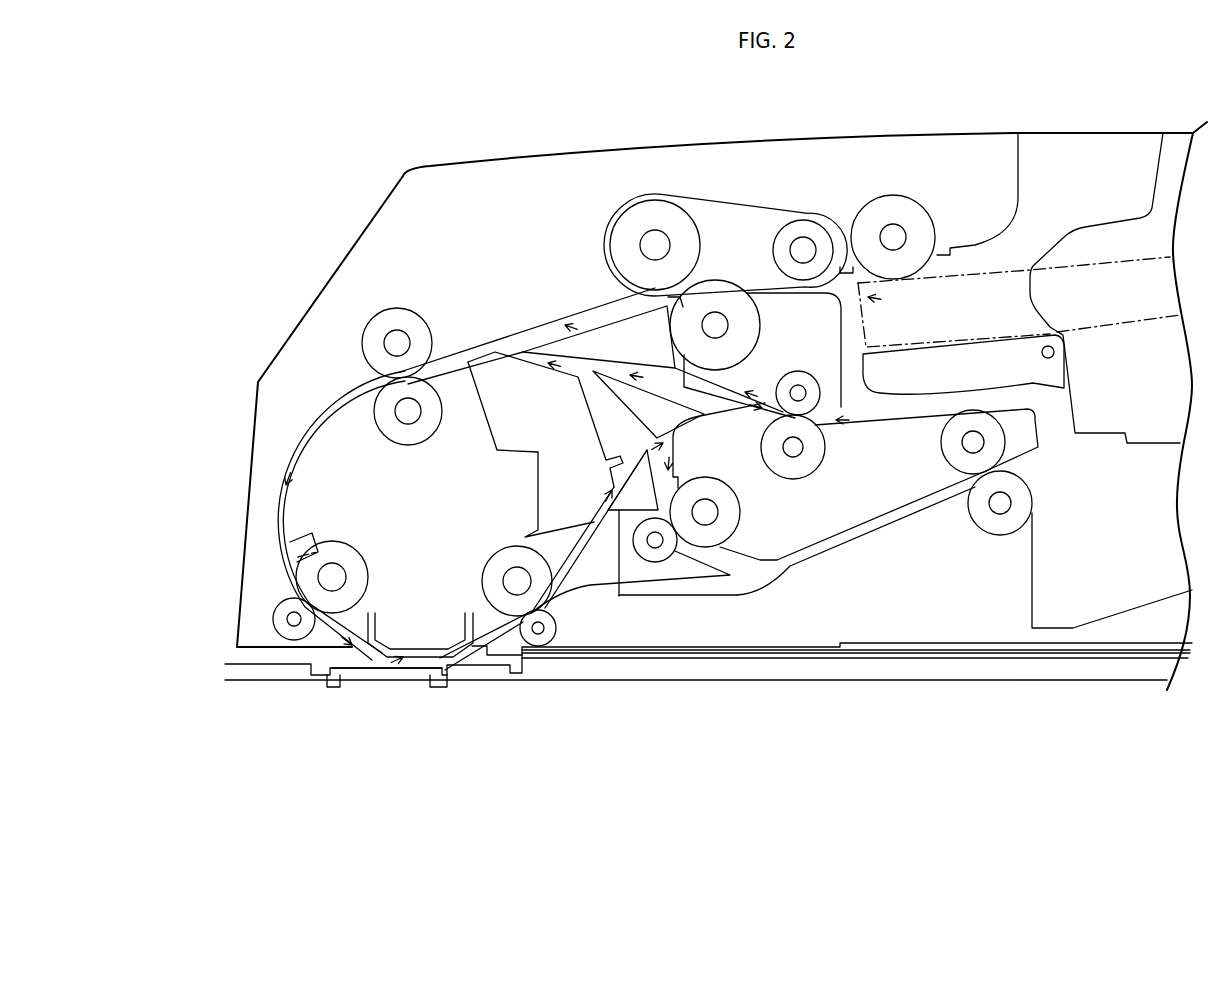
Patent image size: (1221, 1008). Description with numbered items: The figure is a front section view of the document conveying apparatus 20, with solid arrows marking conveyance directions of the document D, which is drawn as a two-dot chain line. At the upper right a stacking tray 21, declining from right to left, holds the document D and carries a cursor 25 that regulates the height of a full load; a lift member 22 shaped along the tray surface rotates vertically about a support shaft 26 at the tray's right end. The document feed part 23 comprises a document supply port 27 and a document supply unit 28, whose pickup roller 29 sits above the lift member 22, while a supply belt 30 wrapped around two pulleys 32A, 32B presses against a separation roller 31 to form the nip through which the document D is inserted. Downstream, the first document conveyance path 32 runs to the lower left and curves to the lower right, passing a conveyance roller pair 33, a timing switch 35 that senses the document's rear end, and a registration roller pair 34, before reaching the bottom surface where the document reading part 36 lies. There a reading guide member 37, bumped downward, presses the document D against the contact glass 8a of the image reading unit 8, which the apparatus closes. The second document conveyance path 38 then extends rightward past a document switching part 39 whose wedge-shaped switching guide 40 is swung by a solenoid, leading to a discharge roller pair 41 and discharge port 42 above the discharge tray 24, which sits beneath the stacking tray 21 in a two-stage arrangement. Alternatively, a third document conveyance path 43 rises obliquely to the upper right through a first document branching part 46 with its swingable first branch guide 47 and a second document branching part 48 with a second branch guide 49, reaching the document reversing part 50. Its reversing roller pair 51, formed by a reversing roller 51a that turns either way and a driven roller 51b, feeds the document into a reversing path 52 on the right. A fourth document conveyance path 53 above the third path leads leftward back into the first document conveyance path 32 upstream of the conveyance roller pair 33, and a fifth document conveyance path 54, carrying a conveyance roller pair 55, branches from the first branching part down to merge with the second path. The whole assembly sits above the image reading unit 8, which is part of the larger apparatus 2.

The image forming apparatus 2 is at (222, 655).
The image reading unit 8 is at (305, 690).
The contact glass 8a is at (358, 688).
The document conveying apparatus 20 is at (1080, 124).
The stacking tray 21 is at (1120, 336).
The lift member 22 is at (934, 342).
The document feed part 23 is at (335, 250).
The discharge tray 24 is at (1082, 624).
The cursor 25 is at (1112, 218).
The support shaft 26 is at (1044, 350).
The document supply port 27 is at (880, 300).
The document supply unit 28 is at (690, 189).
The pickup roller 29 is at (925, 200).
The supply belt 30 is at (606, 230).
The separation roller 31 is at (669, 325).
The first document conveyance path 32 is at (318, 412).
The pulley 32A is at (637, 222).
The pulley 32B is at (800, 214).
The conveyance roller pair 33 is at (428, 305).
The registration roller pair 34 is at (383, 545).
The timing switch 35 is at (305, 545).
The document reading part 36 is at (420, 668).
The reading guide member 37 is at (428, 648).
The second document conveyance path 38 is at (680, 592).
The document switching part 39 is at (556, 556).
The switching guide 40 is at (585, 575).
The discharge roller pair 41 is at (970, 535).
The discharge port 42 is at (1040, 468).
The third document conveyance path 43 is at (605, 482).
The first document branching part 46 is at (608, 452).
The first branch guide 47 is at (610, 432).
The second document branching part 48 is at (735, 393).
The second branch guide 49 is at (593, 370).
The document reversing part 50 is at (845, 437).
The reversing roller pair 51 is at (774, 417).
The reversing roller 51a is at (822, 472).
The driven roller 51b is at (801, 370).
The reversing path 52 is at (937, 407).
The fourth document conveyance path 53 is at (666, 380).
The fifth document conveyance path 54 is at (677, 467).
The conveyance roller pair 55 is at (742, 543).
The document D is at (1005, 270).